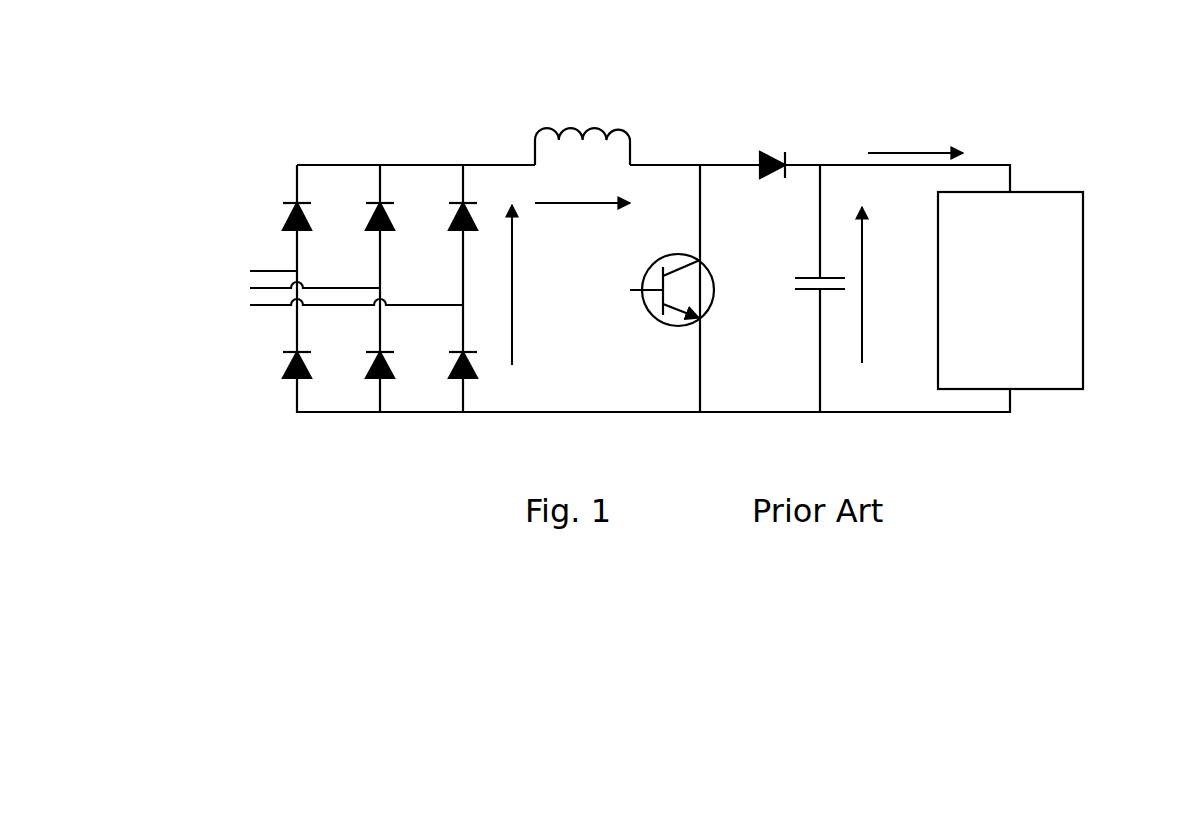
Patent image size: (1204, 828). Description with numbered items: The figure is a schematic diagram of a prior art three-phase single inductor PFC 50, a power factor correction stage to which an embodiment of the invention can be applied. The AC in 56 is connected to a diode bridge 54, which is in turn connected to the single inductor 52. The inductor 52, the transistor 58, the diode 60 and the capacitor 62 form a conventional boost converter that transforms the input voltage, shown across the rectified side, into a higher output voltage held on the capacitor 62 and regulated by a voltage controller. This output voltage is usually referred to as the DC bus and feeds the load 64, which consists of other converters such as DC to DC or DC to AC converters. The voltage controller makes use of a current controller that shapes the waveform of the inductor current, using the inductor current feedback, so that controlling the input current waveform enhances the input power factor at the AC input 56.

The three-phase single inductor PFC 50 is at (940, 64).
The single inductor 52 is at (547, 112).
The diode bridge 54 is at (455, 162).
The AC in 56 is at (236, 239).
The transistor 58 is at (645, 323).
The diode 60 is at (767, 147).
The capacitor 62 is at (795, 268).
The load 64 is at (1073, 260).